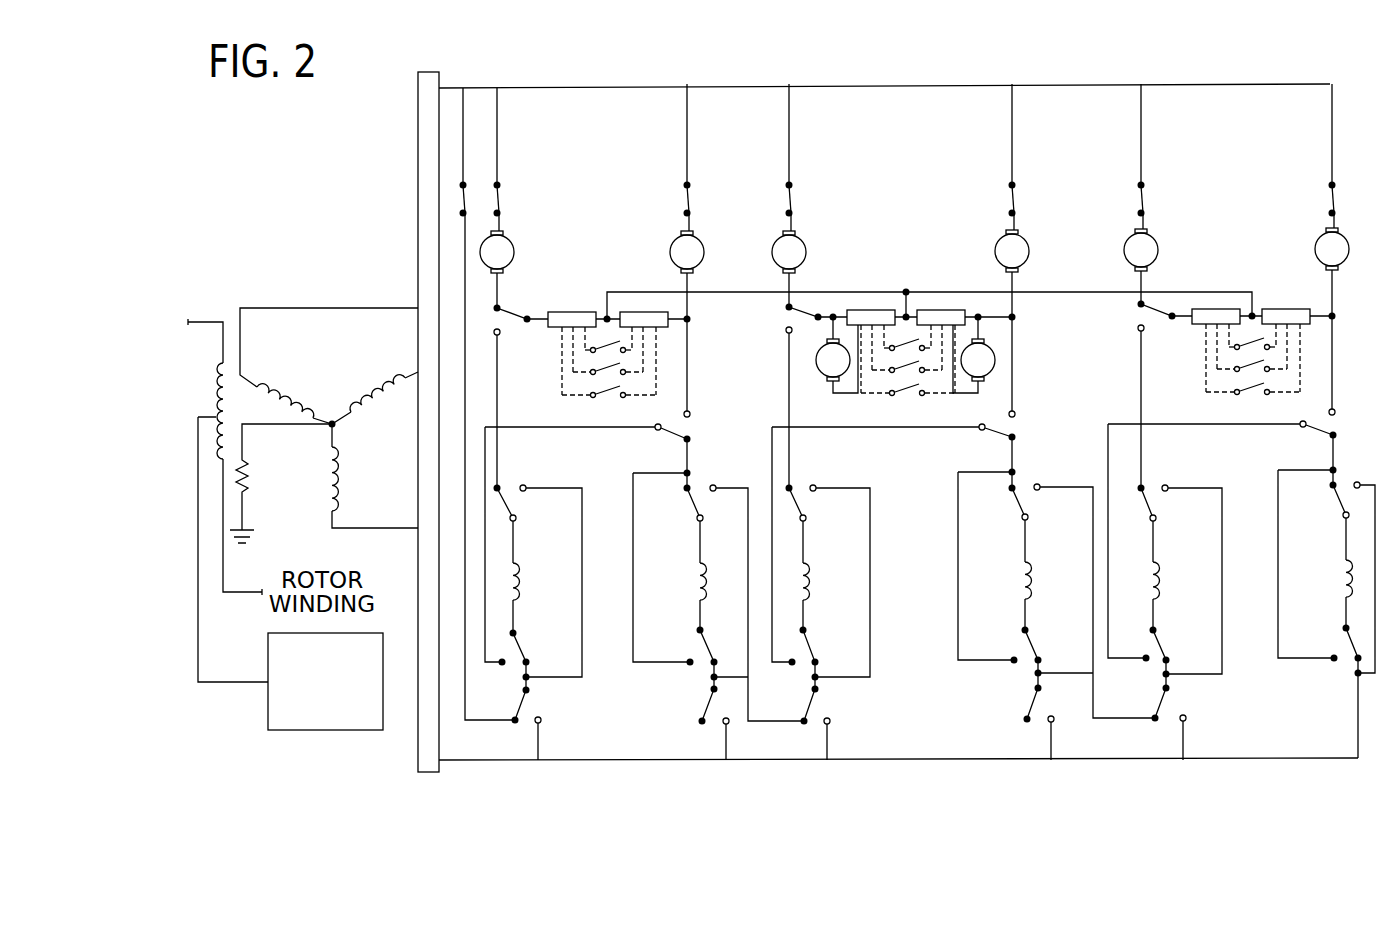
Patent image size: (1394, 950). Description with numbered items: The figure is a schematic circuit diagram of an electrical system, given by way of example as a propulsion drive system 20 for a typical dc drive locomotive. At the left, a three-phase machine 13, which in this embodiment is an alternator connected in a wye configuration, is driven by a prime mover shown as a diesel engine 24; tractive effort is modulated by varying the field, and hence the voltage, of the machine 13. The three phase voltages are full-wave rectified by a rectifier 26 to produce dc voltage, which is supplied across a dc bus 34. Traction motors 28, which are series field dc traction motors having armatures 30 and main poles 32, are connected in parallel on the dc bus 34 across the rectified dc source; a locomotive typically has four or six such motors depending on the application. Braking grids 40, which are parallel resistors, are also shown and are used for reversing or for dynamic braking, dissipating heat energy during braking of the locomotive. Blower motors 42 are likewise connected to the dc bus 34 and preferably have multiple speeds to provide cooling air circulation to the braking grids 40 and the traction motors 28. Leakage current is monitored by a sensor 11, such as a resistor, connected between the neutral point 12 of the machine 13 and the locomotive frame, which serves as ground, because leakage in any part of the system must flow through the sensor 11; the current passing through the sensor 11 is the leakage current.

The leakage current sensor 11 is at (243, 480).
The neutral point 12 is at (332, 424).
The three-phase machine 13 is at (334, 360).
The propulsion drive system 20 is at (1198, 64).
The diesel engine 24 is at (325, 730).
The rectifier 26 is at (418, 175).
The traction motors 28 is at (500, 255).
The armatures 30 is at (508, 247).
The main poles 32 is at (524, 573).
The dc bus 34 is at (1050, 84).
The braking grids 40 is at (557, 327).
The blower motors 42 is at (816, 358).